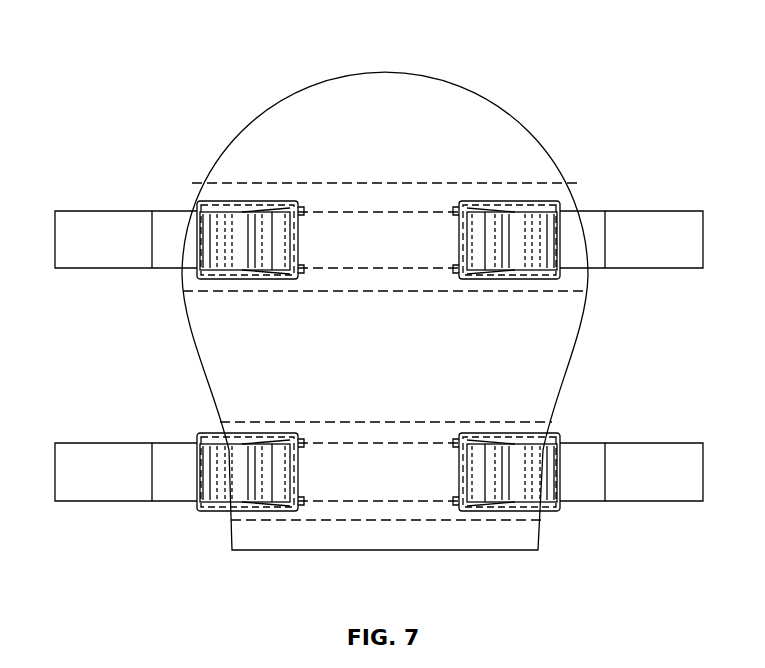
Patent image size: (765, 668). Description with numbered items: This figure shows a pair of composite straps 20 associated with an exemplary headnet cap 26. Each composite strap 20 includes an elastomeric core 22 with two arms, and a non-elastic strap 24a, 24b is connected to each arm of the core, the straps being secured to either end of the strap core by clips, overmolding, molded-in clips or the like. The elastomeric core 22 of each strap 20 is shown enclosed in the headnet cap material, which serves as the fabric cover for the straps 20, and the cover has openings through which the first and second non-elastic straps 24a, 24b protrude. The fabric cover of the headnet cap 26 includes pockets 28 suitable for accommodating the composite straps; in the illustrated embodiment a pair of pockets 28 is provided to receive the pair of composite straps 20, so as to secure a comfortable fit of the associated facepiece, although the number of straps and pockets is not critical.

The composite strap 20 is at (433, 204).
The elastomeric core 22 is at (343, 245).
The first non-elastic strap 24a is at (93, 460).
The second non-elastic strap 24b is at (668, 250).
The headnet cap 26 is at (545, 136).
The pocket 28 is at (408, 409).